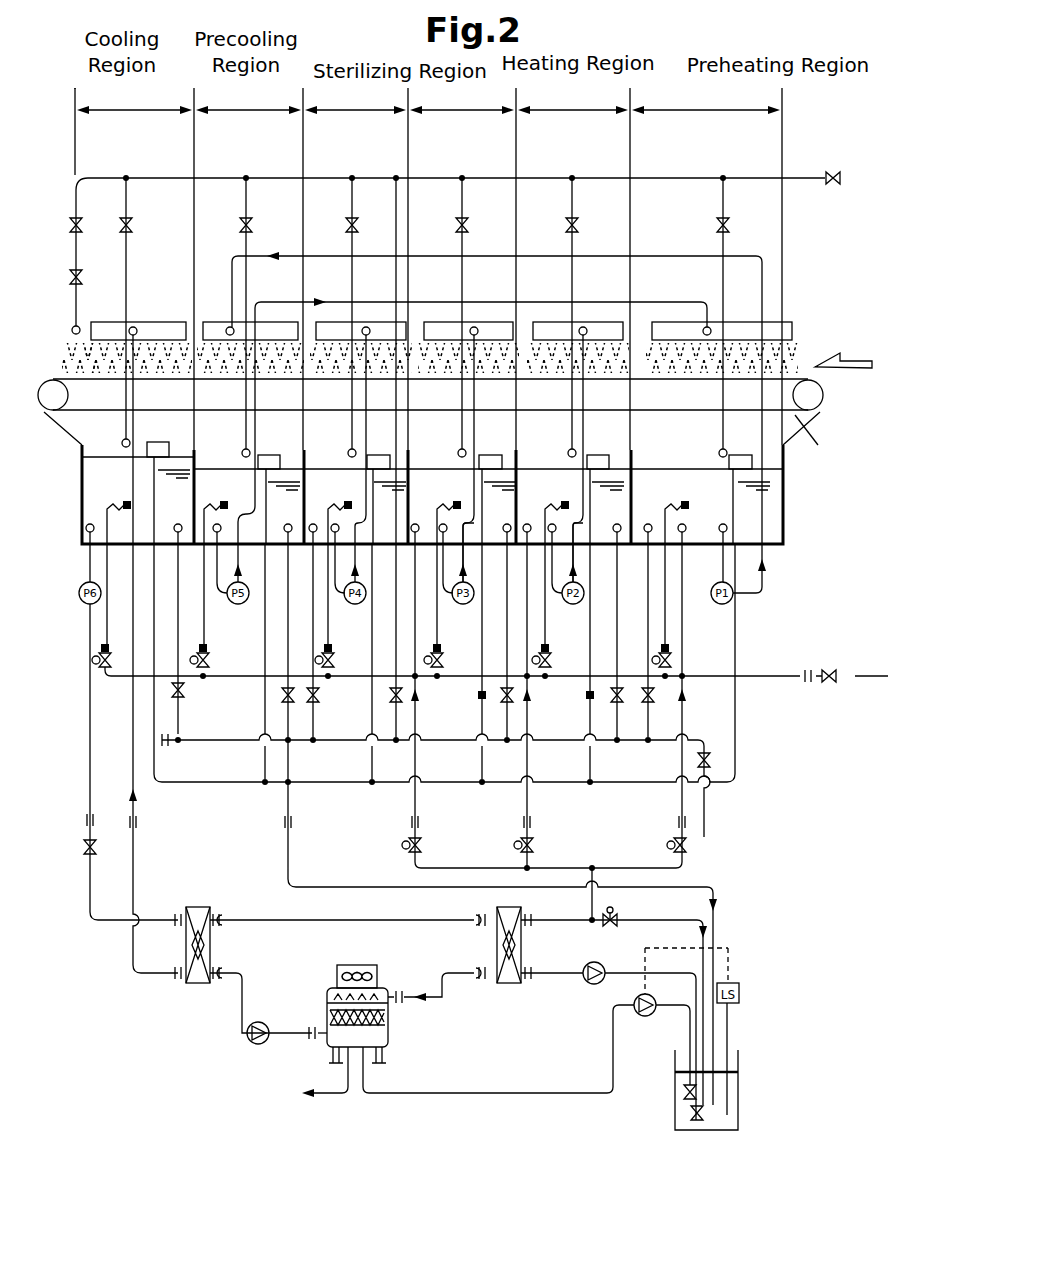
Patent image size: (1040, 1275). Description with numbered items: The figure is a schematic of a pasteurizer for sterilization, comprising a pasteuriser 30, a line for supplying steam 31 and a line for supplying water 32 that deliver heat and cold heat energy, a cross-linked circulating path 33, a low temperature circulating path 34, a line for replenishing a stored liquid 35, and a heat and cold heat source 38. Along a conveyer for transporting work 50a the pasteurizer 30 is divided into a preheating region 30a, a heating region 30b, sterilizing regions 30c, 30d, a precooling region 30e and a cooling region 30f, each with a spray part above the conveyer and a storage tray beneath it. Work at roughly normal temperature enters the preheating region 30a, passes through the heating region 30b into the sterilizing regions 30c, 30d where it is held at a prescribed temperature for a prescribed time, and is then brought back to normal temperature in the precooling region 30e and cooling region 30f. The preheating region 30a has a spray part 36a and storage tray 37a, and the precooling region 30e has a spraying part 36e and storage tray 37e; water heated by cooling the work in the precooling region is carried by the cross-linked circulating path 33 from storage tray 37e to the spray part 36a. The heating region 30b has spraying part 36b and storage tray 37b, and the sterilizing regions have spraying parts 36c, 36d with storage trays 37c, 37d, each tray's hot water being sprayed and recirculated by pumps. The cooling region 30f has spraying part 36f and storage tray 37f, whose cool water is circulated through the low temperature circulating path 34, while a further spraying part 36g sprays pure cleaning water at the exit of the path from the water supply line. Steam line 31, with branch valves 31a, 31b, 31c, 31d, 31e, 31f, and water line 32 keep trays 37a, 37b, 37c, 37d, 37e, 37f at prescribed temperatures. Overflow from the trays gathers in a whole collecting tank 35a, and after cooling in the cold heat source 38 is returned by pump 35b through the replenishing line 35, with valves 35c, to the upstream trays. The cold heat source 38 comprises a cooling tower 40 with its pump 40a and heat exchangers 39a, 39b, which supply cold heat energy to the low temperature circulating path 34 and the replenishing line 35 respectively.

The pasteurizer 30 is at (834, 263).
The preheating region 30a is at (728, 304).
The heating region 30b is at (578, 304).
The sterilizing region 30c is at (467, 304).
The sterilizing region 30d is at (358, 304).
The precooling region 30e is at (252, 304).
The cooling region 30f is at (131, 299).
The line for supplying steam 31 is at (499, 665).
The control valve for preheating tank heater 31a is at (674, 659).
The control valve for heating tank heater 31b is at (570, 645).
The control valve for sterilizing tank heater 31c is at (458, 645).
The control valve for sterilizing tank heater 31d is at (350, 645).
The control valve for precooling tank heater 31e is at (226, 645).
The control valve for cooling tank heater 31f is at (92, 657).
The line for supplying water 32 is at (888, 178).
The cross-linked circulating path 33 is at (662, 302).
The low temperature circulating path 34 is at (130, 737).
The line for replenishing stored liquid 35 is at (716, 896).
The whole collecting tank 35a is at (671, 845).
The pump 35b is at (534, 845).
The drain valve 35c is at (421, 845).
The spray part 36a is at (745, 306).
The spraying part 36b is at (586, 321).
The spraying part 36c is at (476, 321).
The spraying part 36d is at (361, 321).
The spraying part 36e is at (252, 321).
The spraying part 36f is at (150, 321).
The spraying part 36g is at (78, 325).
The storage tray 37a is at (664, 468).
The storage tray 37b is at (530, 472).
The storage tray 37c is at (424, 472).
The storage tray 37d is at (316, 472).
The storage tray 37e is at (208, 472).
The storage tray 37f is at (92, 460).
The heat and cold heat source 38 is at (274, 910).
The heat exchanger 39a is at (210, 945).
The heat exchanger 39b is at (496, 945).
The cooling tower 40 is at (386, 1036).
The cooling tower pump 40a is at (258, 1045).
The conveyer for transporting work 50a is at (800, 422).